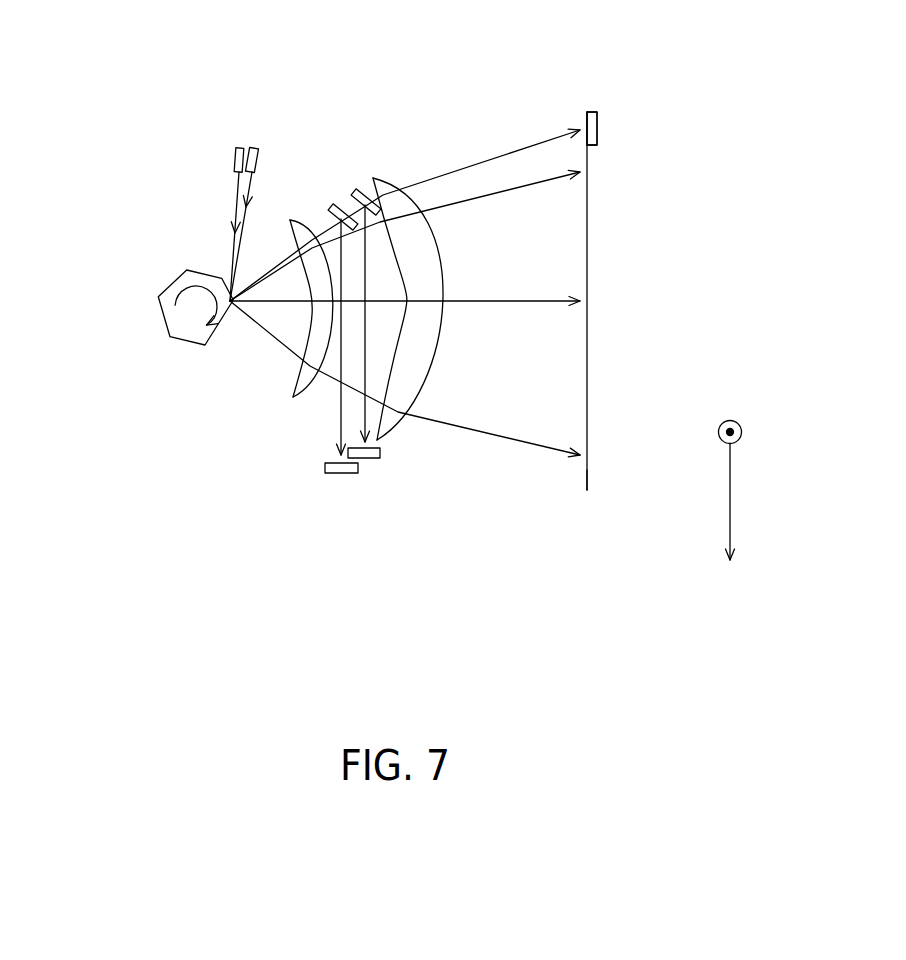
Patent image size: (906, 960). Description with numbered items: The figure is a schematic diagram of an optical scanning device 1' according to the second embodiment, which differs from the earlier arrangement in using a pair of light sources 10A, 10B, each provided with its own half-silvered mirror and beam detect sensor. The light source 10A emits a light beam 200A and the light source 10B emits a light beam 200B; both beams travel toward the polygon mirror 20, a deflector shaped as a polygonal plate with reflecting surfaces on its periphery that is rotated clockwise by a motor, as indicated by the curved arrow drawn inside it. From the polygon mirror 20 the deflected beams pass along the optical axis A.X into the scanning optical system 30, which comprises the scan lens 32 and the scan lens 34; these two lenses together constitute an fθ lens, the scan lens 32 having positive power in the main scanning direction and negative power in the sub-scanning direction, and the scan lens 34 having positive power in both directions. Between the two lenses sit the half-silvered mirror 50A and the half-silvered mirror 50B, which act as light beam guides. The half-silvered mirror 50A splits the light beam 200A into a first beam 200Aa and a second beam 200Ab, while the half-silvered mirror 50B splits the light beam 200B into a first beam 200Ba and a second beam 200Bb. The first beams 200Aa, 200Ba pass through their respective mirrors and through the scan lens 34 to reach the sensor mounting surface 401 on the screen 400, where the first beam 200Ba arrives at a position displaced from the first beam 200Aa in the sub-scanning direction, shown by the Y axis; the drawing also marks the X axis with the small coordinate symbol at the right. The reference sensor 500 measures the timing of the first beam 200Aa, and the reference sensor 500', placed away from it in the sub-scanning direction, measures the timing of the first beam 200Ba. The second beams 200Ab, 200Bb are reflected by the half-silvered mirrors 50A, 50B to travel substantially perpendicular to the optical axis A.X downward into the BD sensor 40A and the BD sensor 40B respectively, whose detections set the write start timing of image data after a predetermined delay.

The optical scanning device 1' is at (92, 90).
The light source 10A is at (238, 147).
The light source 10B is at (254, 147).
The polygon mirror 20 is at (183, 337).
The scanning optical system 30 is at (395, 67).
The scan lens 32 is at (291, 214).
The scan lens 34 is at (384, 176).
The BD sensor 40A is at (330, 474).
The BD sensor 40B is at (370, 459).
The half-silvered mirror 50A is at (332, 205).
The half-silvered mirror 50B is at (368, 192).
The light beam 200A is at (231, 209).
The light beam 200B is at (241, 183).
The first beam 200Aa is at (508, 153).
The first beam 200Ba is at (405, 235).
The second beam 200Ab is at (339, 404).
The second beam 200Bb is at (365, 358).
The screen (scanned surface) 400 is at (612, 245).
The sensor mounting surface 401 is at (583, 473).
The reference sensor 500 is at (666, 112).
The reference sensor 500' is at (592, 128).
The optical axis A.X is at (496, 300).
The X-axis X is at (730, 520).
The Y-axis Y is at (732, 420).